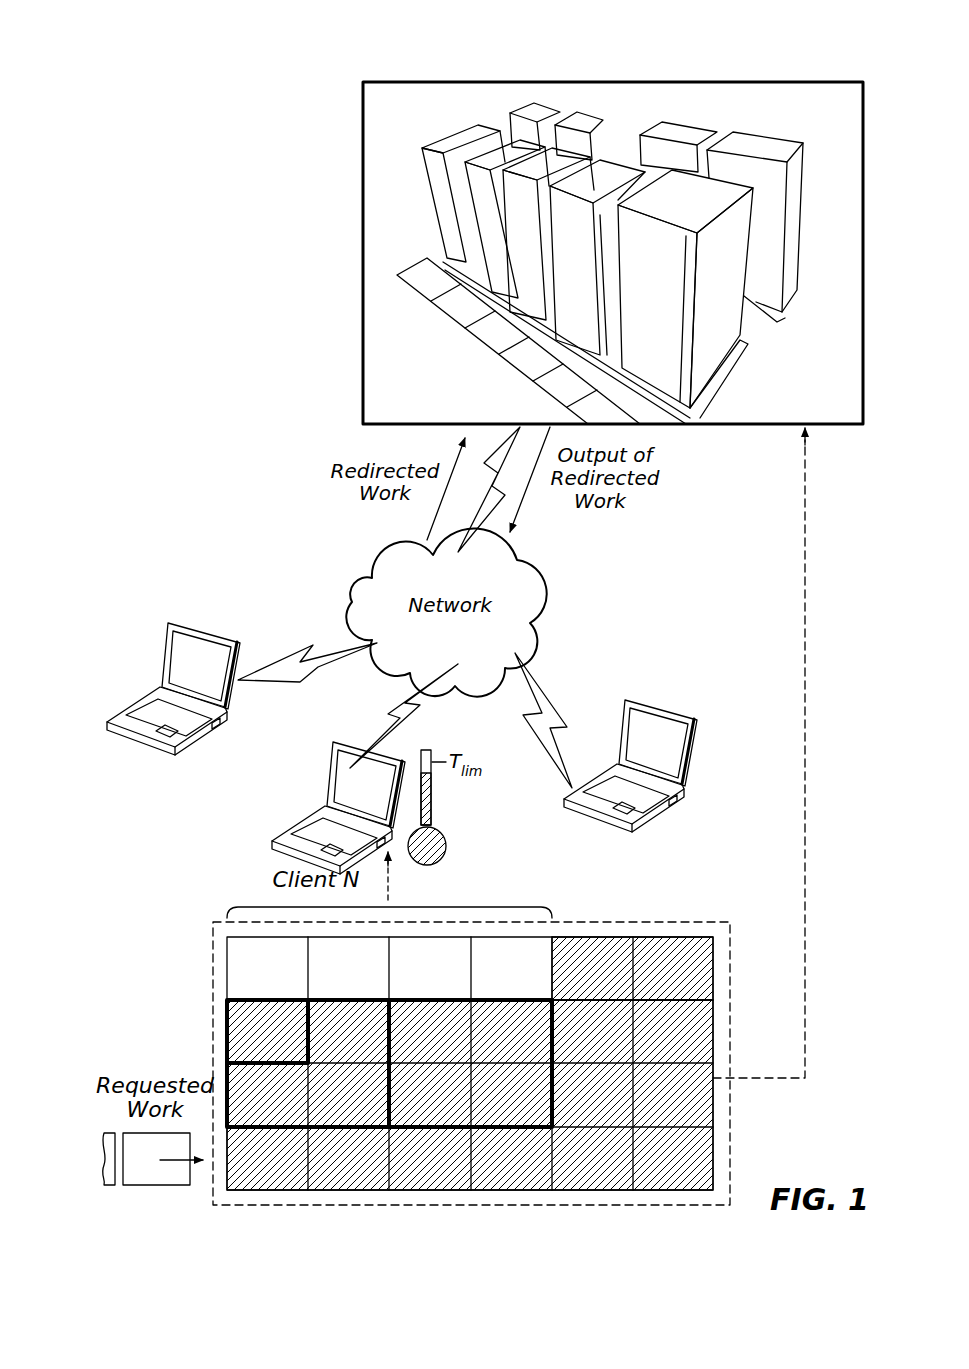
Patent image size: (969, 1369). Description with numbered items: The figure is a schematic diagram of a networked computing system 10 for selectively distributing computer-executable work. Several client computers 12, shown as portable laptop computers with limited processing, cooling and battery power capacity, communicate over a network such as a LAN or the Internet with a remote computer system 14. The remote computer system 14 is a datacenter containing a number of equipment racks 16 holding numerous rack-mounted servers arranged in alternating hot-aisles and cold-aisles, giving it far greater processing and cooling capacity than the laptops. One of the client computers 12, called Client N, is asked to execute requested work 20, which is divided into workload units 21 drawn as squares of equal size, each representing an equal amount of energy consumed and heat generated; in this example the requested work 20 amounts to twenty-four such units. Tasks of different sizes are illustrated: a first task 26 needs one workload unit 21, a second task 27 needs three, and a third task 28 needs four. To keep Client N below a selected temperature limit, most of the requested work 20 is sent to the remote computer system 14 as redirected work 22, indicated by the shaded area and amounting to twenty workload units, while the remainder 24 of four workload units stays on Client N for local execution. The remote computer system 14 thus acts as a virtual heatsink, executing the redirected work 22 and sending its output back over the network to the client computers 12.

The networked computing system 10 is at (338, 188).
The client computer 12 is at (165, 648).
The remote computer system 14 is at (733, 82).
The equipment racks 16 is at (770, 256).
The requested work 20 is at (438, 1031).
The workload unit 21 is at (260, 950).
The redirected work 22 is at (607, 938).
The remainder of the requested work 24 is at (388, 905).
The first task 26 is at (227, 1017).
The second task 27 is at (337, 1000).
The third task 28 is at (522, 1000).